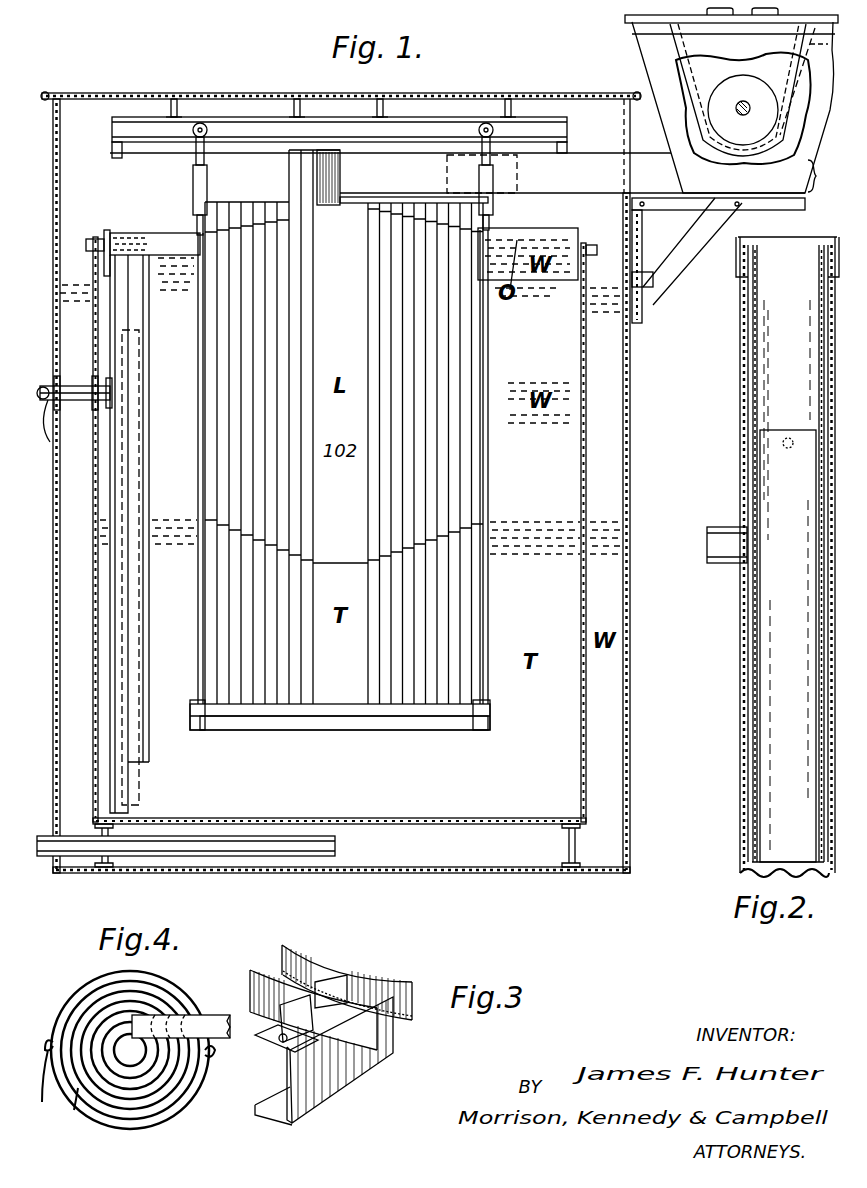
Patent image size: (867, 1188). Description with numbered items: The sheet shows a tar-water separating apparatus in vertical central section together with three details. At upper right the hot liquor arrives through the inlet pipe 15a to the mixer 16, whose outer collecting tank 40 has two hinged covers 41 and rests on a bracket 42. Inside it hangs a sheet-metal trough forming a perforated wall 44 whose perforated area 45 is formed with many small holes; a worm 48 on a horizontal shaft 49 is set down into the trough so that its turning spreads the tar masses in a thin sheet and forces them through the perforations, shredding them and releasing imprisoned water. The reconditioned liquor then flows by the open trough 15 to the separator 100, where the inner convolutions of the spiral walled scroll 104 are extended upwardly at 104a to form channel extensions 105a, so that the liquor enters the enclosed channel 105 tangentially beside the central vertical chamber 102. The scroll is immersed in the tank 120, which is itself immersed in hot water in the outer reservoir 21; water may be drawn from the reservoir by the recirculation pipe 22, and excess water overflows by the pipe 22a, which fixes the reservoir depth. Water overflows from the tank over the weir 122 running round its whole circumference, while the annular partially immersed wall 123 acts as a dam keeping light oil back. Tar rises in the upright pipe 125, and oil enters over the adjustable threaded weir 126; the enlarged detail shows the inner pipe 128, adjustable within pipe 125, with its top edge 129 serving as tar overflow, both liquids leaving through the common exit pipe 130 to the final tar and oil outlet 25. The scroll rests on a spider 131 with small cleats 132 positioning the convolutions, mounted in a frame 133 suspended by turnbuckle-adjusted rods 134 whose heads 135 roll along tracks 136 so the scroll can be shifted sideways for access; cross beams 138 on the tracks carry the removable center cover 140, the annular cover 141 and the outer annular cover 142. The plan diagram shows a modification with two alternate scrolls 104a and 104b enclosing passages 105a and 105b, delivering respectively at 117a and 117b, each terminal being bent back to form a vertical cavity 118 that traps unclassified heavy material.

In FIG. 1, the passage or open trough 15 is at (667, 187).
In FIG. 4, the passage or open trough 15 is at (219, 1017).
In FIG. 1, the inlet pipe 15a is at (807, 81).
In FIG. 1, the mixer 16 is at (736, 185).
In FIG. 1, the outer vessel or reservoir 21 is at (631, 439).
In FIG. 1, the recirculation pipe 22 is at (340, 843).
In FIG. 1, the overflow pipe 22a is at (650, 287).
In FIG. 1, the final tar and oil outlet 25 is at (50, 442).
In FIG. 1, the outer or collecting tank 40 is at (653, 42).
In FIG. 1, the hinged covers 41 is at (630, 22).
In FIG. 1, the bracket 42 is at (684, 253).
In FIG. 1, the perforated wall or trough 44 is at (690, 70).
In FIG. 1, the perforated area 45 is at (735, 150).
In FIG. 1, the worm 48 is at (743, 110).
In FIG. 1, the horizontal shaft 49 is at (740, 116).
In FIG. 1, the separator 100 is at (589, 476).
In FIG. 1, the central vertical chamber 102 is at (346, 427).
In FIG. 1, the spiral walled duct or scroll 104 is at (452, 452).
In FIG. 3, the spiral walled duct or scroll 104 is at (276, 962).
In FIG. 1, the upward extension of inner convolutions 104a is at (330, 172).
In FIG. 4, the upward extension of inner convolutions 104a is at (130, 1097).
In FIG. 4, the second spiral scroll 104b is at (150, 1082).
In FIG. 1, the channel or passage 105 is at (447, 483).
In FIG. 3, the channel or passage 105 is at (313, 1010).
In FIG. 1, the channel extension 105a is at (300, 178).
In FIG. 4, the channel extension 105a is at (113, 1000).
In FIG. 4, the second enclosed passage 105b is at (177, 1085).
In FIG. 4, the exit of first scroll 117a is at (230, 1069).
In FIG. 4, the exit of second scroll 117b is at (72, 1112).
In FIG. 4, the vertical cavity 118 is at (50, 1078).
In FIG. 1, the tank 120 is at (589, 388).
In FIG. 1, the weir or dam 122 is at (90, 240).
In FIG. 1, the partially immersed wall 123 is at (107, 233).
In FIG. 1, the upright pipe 125 is at (151, 678).
In FIG. 2, the upright pipe 125 is at (742, 482).
In FIG. 1, the adjustably threaded weir or nipple 126 is at (142, 233).
In FIG. 2, the adjustably threaded weir or nipple 126 is at (785, 240).
In FIG. 1, the inner pipe 128 is at (122, 332).
In FIG. 2, the inner pipe 128 is at (783, 781).
In FIG. 2, the top edge or weir 129 is at (780, 431).
In FIG. 1, the common exit pipe 130 is at (73, 388).
In FIG. 2, the common exit pipe 130 is at (718, 565).
In FIG. 1, the spider 131 is at (352, 708).
In FIG. 3, the spider 131 is at (337, 1073).
In FIG. 3, the cleats or angle pieces 132 is at (330, 997).
In FIG. 1, the frame 133 is at (280, 718).
In FIG. 1, the bolts or rods 134 is at (196, 700).
In FIG. 1, the head 135 is at (204, 144).
In FIG. 1, the tracks 136 is at (339, 137).
In FIG. 1, the cross beams 138 is at (177, 103).
In FIG. 1, the center cover 140 is at (380, 99).
In FIG. 1, the annular cover 141 is at (280, 80).
In FIG. 1, the outer annular cover 142 is at (138, 93).